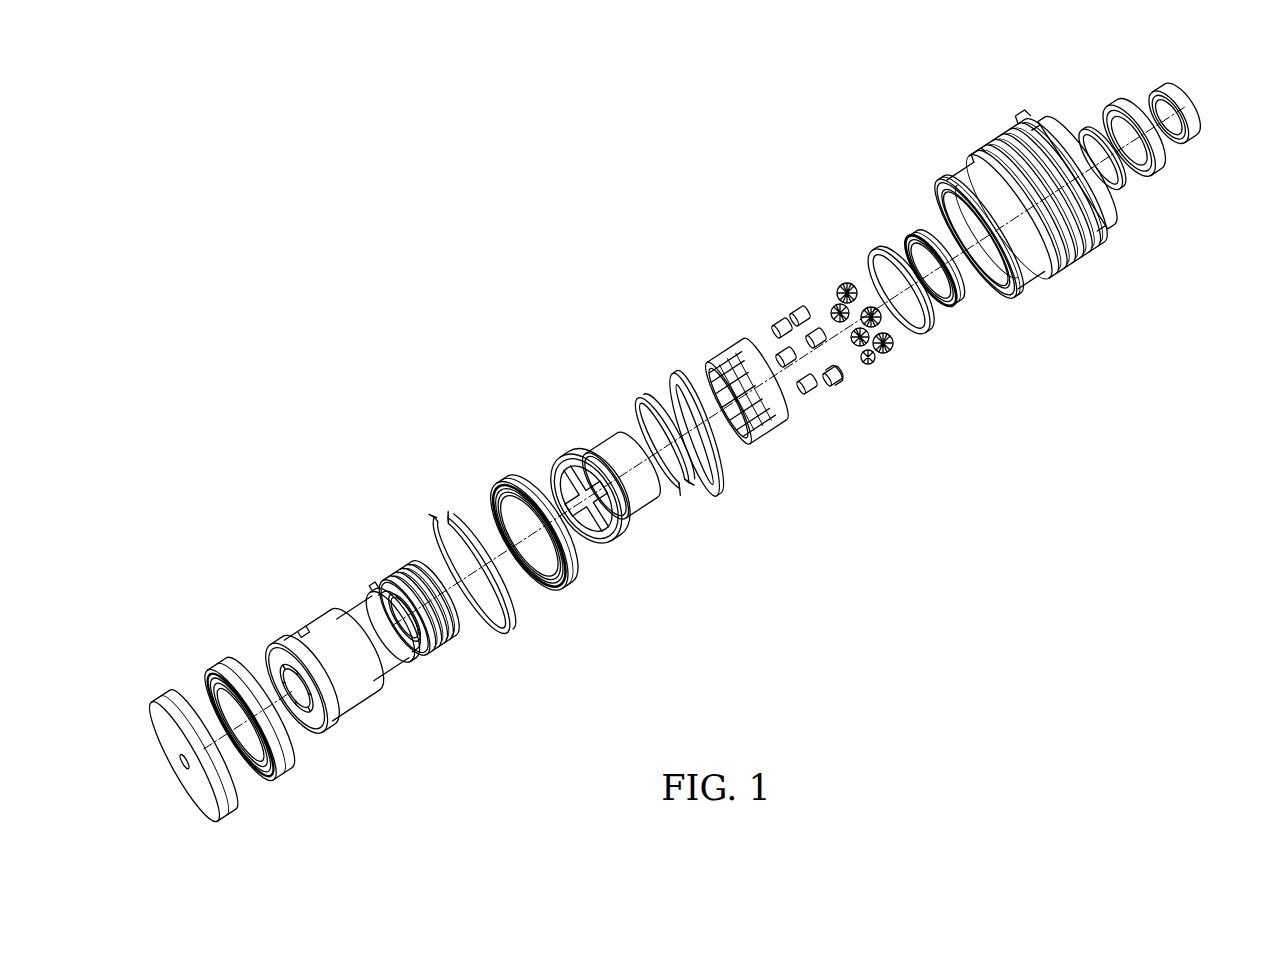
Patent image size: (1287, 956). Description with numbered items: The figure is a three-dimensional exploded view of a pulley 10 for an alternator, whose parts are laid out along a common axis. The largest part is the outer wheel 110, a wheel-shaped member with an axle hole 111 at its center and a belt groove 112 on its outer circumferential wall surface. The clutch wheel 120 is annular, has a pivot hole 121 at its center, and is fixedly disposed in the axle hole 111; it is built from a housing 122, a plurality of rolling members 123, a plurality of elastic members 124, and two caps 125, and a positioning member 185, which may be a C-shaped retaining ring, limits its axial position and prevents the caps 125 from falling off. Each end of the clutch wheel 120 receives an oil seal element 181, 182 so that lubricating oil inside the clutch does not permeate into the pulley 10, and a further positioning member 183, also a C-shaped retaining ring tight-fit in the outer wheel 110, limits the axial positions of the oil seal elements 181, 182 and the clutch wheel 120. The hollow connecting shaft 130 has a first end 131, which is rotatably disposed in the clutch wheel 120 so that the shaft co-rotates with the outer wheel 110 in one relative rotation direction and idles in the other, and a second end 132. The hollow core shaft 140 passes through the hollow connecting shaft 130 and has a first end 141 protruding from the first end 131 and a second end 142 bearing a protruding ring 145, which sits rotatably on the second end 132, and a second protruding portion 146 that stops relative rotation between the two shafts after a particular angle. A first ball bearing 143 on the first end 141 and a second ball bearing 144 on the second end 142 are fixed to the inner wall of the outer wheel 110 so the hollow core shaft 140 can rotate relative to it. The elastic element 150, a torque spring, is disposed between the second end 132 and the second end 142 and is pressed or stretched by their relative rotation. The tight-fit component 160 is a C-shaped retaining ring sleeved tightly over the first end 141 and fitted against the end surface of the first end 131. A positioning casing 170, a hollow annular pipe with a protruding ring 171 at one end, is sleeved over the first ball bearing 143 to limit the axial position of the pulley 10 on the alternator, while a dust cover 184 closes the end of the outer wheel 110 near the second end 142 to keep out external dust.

The pulley 10 is at (450, 292).
The outer wheel 110 is at (1042, 229).
The axle hole 111 is at (1003, 282).
The belt groove 112 is at (1097, 250).
The clutch wheel 120 is at (838, 406).
The pivot hole 121 is at (713, 386).
The housing 122 is at (780, 415).
The rolling members 123 is at (842, 380).
The elastic members 124 is at (890, 347).
The caps 125 is at (737, 470).
The hollow connecting shaft 130 is at (584, 461).
The first end 131 is at (618, 441).
The second end 132 is at (566, 457).
The hollow core shaft 140 is at (331, 644).
The first end 141 is at (350, 652).
The second end 142 is at (305, 728).
The first ball bearing 143 is at (1158, 160).
The second ball bearing 144 is at (205, 670).
The protruding ring 145 is at (300, 645).
The second protruding portion 146 is at (310, 647).
The elastic element 150 is at (388, 566).
The tight-fit component 160 is at (1127, 187).
The positioning casing 170 is at (1200, 132).
The protruding ring 171 is at (1183, 147).
The oil seal element 181 is at (912, 240).
The oil seal element 182 is at (497, 488).
The positioning member 183 is at (440, 520).
The dust cover 184 is at (153, 700).
The positioning member 185 is at (642, 401).